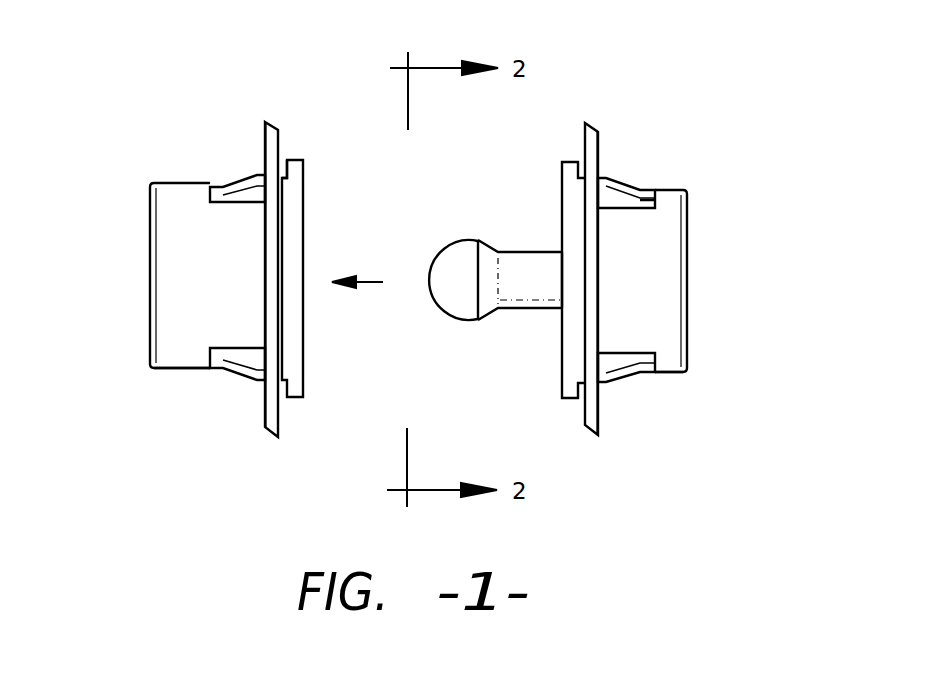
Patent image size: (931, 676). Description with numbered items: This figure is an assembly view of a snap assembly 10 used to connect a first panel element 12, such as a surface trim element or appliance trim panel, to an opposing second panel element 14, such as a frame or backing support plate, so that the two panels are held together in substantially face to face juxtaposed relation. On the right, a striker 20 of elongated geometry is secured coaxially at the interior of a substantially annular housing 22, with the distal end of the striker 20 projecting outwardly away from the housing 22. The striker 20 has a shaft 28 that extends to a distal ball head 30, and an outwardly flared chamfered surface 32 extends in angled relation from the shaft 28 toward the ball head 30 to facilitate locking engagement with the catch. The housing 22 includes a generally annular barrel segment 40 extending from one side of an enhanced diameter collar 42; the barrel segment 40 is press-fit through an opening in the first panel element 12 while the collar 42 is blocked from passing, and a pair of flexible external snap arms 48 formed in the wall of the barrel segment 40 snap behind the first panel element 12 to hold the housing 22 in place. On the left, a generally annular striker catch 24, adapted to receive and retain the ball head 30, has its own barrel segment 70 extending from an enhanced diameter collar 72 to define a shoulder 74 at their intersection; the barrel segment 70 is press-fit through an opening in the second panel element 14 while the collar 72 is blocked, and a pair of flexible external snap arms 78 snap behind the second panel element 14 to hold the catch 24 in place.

The snap assembly 10 is at (336, 444).
The first panel element 12 is at (600, 140).
The second panel element 14 is at (279, 140).
The striker 20 is at (478, 273).
The housing 22 is at (683, 185).
The striker catch 24 is at (185, 176).
The shaft 28 is at (520, 252).
The ball head 30 is at (436, 257).
The chamfered surface 32 is at (490, 243).
The barrel segment 40 is at (677, 374).
The enhanced diameter collar 42 is at (571, 400).
The external snap arms 48 is at (617, 178).
The barrel segment 70 is at (175, 370).
The enhanced diameter collar 72 is at (318, 375).
The shoulder 74 is at (282, 168).
The external snap arms 78 is at (248, 175).